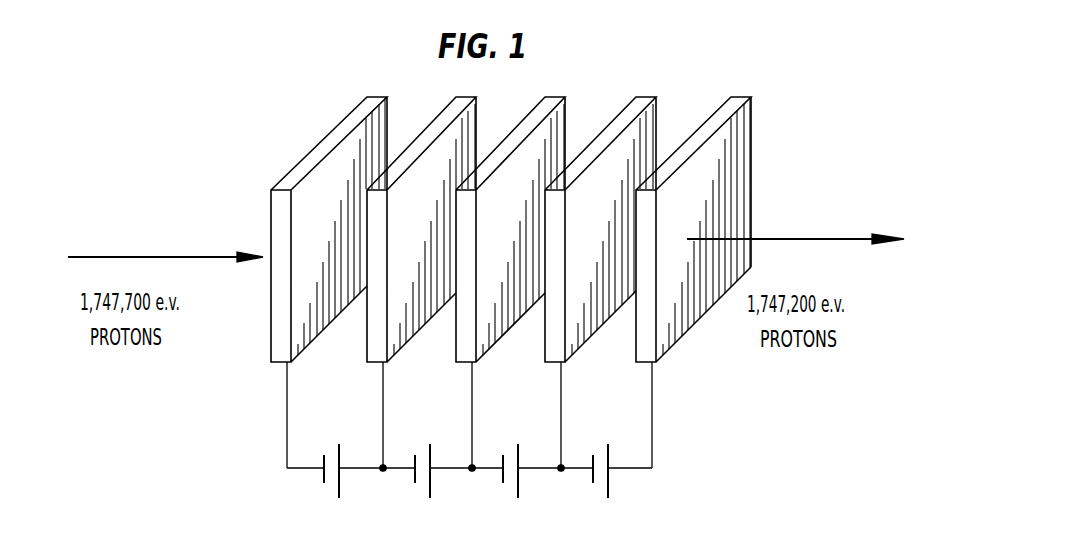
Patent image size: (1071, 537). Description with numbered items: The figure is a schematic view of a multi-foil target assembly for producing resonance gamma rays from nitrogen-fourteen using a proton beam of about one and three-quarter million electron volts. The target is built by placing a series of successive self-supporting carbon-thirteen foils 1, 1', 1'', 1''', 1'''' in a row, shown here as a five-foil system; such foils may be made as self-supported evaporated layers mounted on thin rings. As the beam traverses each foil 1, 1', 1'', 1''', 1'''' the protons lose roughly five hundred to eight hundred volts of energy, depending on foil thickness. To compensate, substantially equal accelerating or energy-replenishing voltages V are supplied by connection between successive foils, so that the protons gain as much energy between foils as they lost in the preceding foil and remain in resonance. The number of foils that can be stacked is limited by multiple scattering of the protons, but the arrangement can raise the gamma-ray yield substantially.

The self-supporting foil 1 is at (333, 262).
The self-supporting foil 1' is at (432, 266).
The self-supporting foil 1'' is at (523, 266).
The self-supporting foil 1''' is at (615, 266).
The self-supporting foil 1'''' is at (711, 266).
The voltage V is at (469, 458).